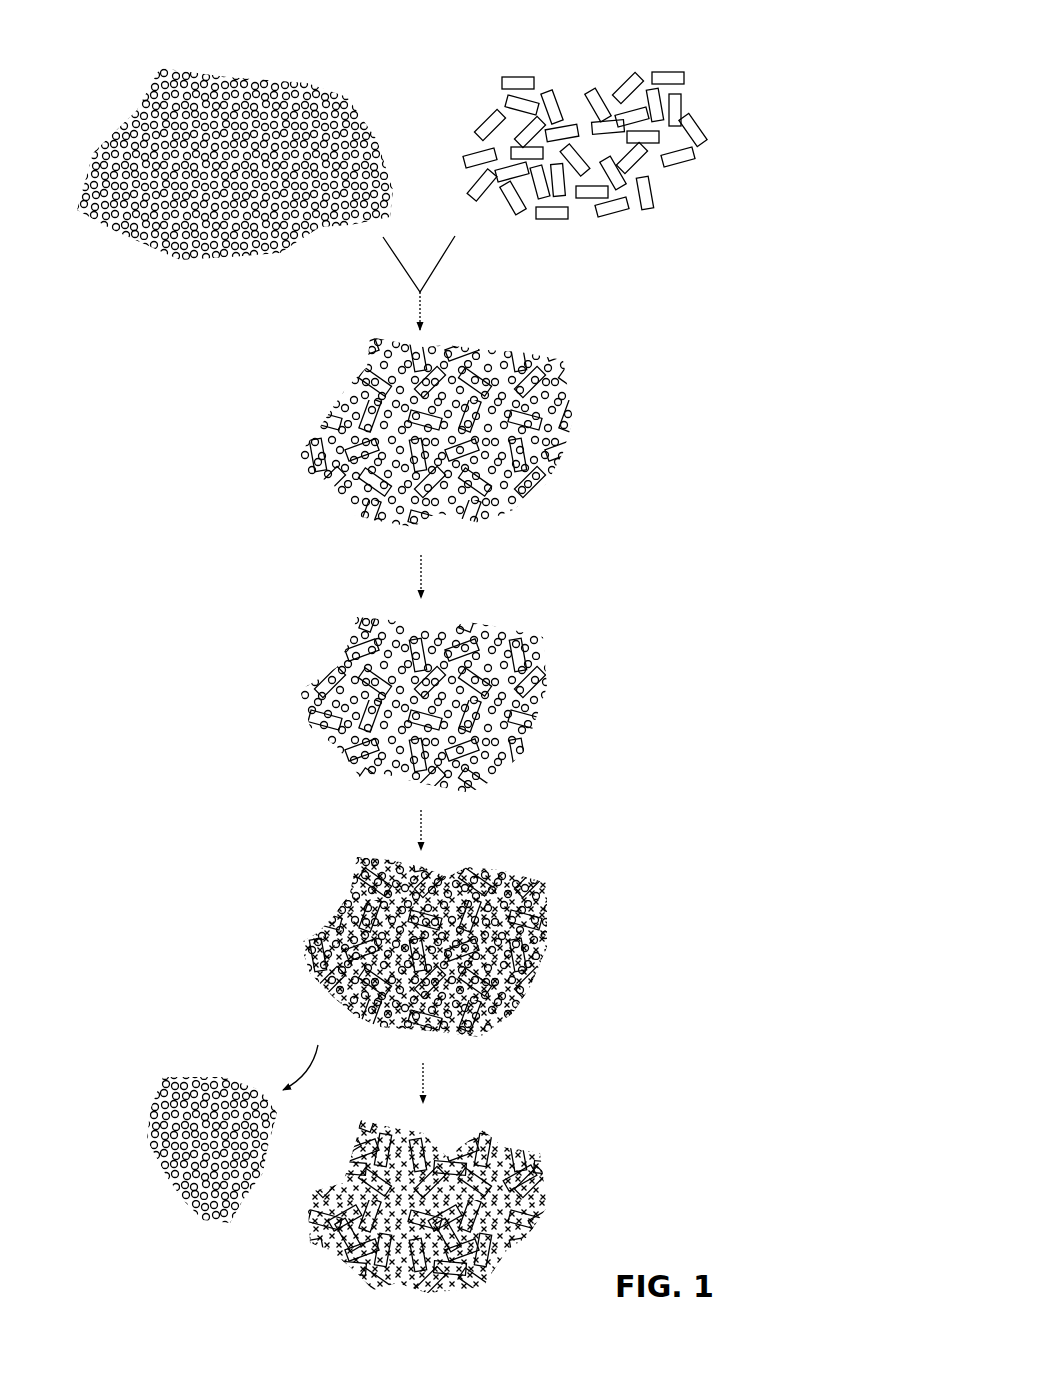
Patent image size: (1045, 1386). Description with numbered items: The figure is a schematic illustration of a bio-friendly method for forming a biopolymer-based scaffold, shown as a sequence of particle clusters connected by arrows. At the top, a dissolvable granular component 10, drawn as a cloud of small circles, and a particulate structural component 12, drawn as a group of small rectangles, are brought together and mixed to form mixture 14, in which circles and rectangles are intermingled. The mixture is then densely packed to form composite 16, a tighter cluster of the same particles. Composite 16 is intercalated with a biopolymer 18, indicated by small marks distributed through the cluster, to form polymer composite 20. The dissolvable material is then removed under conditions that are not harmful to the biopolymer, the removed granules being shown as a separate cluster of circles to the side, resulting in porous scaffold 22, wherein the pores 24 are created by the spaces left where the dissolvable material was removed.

The dissolvable granular component 10 is at (121, 73).
The particulate structural component 12 is at (682, 105).
The mixture 14 is at (338, 358).
The composite 16 is at (345, 588).
The biopolymer 18 is at (522, 878).
The polymer composite 20 is at (345, 840).
The porous scaffold 22 is at (546, 1112).
The pores 24 is at (533, 1176).